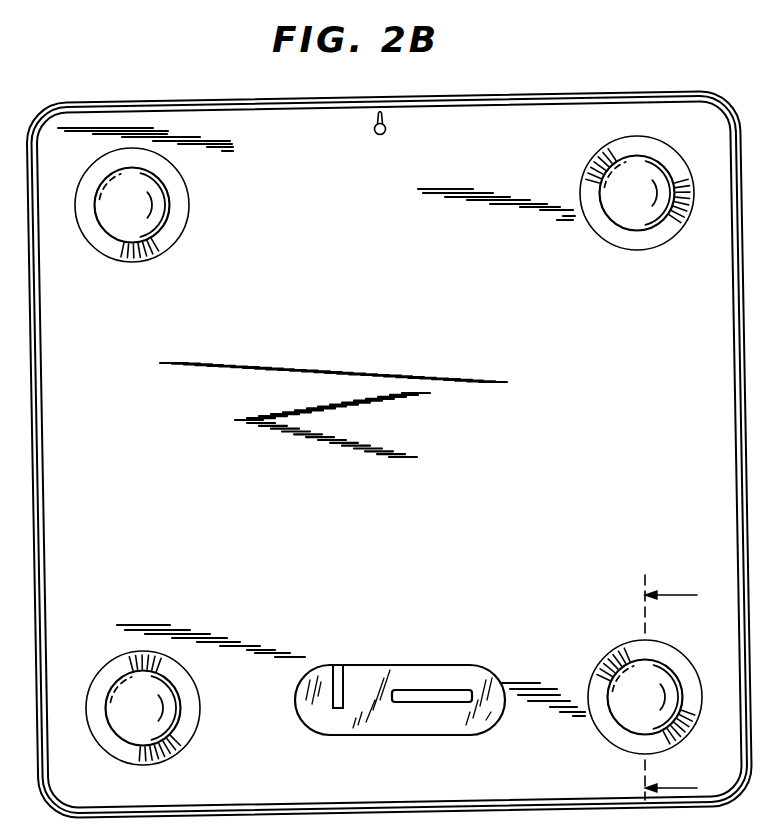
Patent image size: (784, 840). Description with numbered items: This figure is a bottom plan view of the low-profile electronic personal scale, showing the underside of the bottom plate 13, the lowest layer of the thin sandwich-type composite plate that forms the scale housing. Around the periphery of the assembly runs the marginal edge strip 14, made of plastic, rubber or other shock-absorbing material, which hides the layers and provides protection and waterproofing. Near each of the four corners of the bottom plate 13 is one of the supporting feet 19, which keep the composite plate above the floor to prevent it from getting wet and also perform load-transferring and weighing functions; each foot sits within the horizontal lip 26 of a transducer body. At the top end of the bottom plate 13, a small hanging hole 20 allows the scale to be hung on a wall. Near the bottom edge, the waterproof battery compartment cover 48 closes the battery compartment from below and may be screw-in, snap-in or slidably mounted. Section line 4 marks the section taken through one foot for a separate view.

The bottom plate 13 is at (118, 128).
The marginal edge strip 14 is at (27, 140).
The supporting feet 19 is at (135, 230).
The hanging hole 20 is at (374, 137).
The horizontal lip 26 is at (177, 227).
The battery compartment cover 48 is at (357, 668).
The section line 4- 4 is at (681, 687).